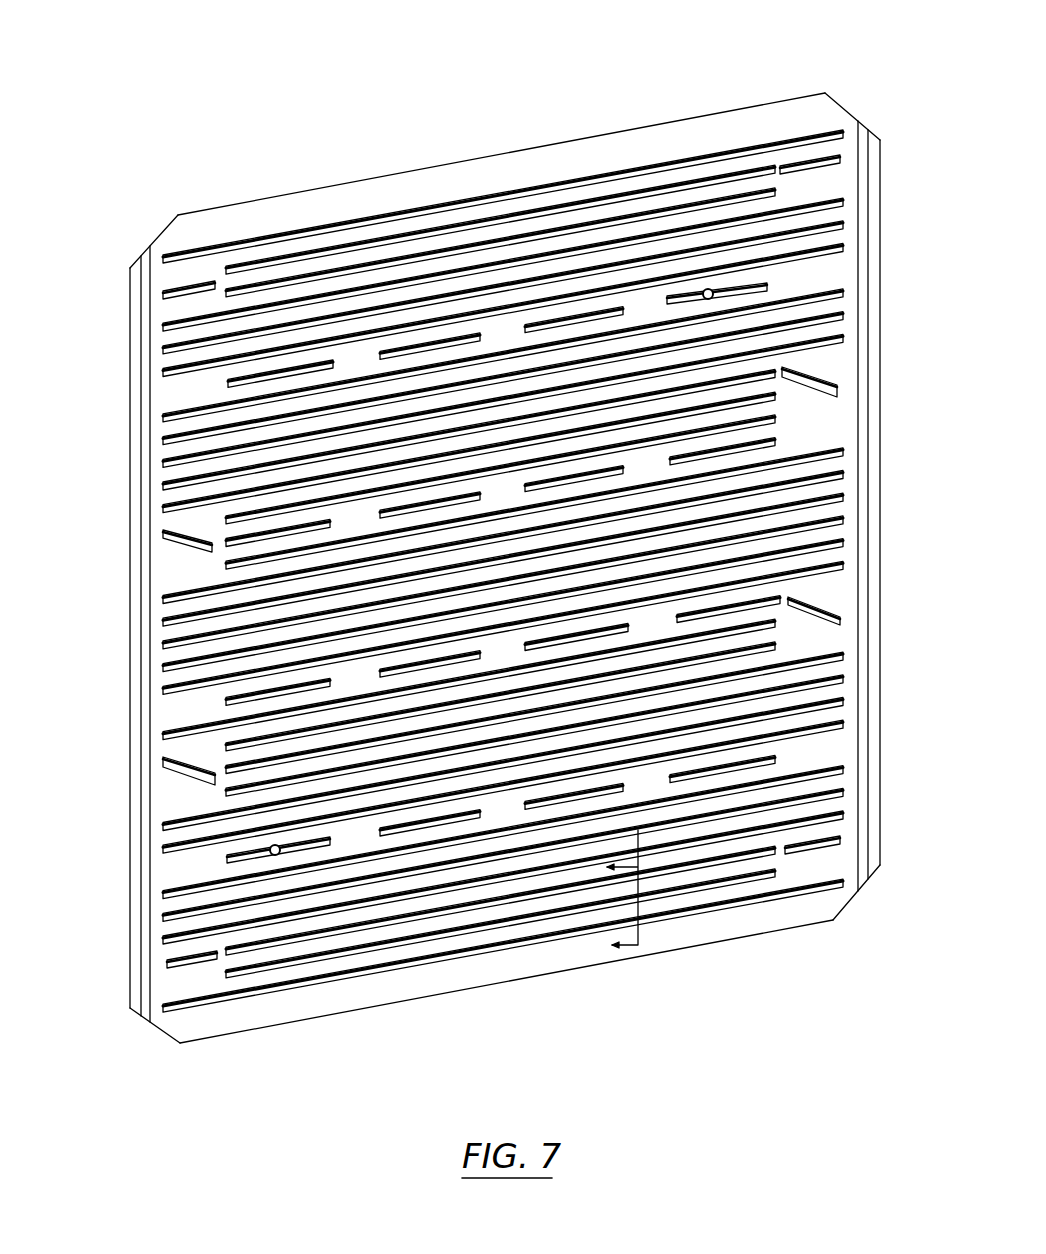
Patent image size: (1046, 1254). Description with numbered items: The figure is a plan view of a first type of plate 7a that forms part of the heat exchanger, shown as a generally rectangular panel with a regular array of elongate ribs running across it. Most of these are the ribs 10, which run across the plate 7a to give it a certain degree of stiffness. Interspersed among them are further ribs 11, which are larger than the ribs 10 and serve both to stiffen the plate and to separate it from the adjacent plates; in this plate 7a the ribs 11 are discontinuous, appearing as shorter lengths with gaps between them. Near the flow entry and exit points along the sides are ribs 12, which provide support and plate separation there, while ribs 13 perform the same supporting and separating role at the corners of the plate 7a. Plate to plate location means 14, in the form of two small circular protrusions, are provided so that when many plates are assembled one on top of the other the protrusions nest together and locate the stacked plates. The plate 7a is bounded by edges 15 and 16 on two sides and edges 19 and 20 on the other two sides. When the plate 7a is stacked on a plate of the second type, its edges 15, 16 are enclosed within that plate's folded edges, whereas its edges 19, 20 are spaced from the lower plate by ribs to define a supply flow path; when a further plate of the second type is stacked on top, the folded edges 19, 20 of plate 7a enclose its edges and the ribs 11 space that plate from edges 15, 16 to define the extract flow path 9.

The plate 7a is at (282, 197).
The extract flow path 9 is at (635, 892).
The ribs 10 is at (698, 157).
The ribs 11 is at (550, 320).
The ribs 12 is at (163, 537).
The ribs 13 is at (197, 287).
The plate to plate location means 14 is at (773, 282).
The edge 15 is at (677, 950).
The edge 16 is at (510, 148).
The folded edge 19 is at (882, 480).
The folded edge 20 is at (132, 626).